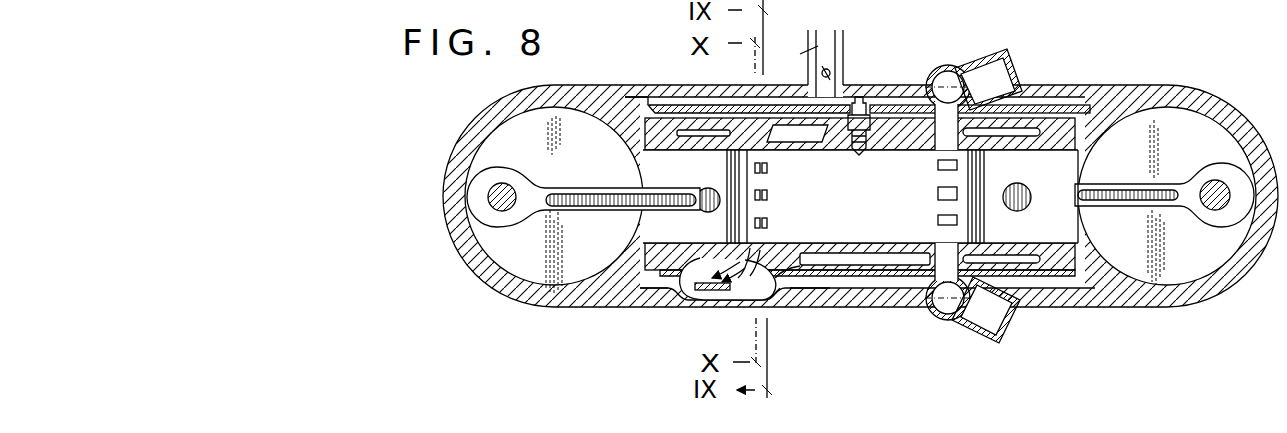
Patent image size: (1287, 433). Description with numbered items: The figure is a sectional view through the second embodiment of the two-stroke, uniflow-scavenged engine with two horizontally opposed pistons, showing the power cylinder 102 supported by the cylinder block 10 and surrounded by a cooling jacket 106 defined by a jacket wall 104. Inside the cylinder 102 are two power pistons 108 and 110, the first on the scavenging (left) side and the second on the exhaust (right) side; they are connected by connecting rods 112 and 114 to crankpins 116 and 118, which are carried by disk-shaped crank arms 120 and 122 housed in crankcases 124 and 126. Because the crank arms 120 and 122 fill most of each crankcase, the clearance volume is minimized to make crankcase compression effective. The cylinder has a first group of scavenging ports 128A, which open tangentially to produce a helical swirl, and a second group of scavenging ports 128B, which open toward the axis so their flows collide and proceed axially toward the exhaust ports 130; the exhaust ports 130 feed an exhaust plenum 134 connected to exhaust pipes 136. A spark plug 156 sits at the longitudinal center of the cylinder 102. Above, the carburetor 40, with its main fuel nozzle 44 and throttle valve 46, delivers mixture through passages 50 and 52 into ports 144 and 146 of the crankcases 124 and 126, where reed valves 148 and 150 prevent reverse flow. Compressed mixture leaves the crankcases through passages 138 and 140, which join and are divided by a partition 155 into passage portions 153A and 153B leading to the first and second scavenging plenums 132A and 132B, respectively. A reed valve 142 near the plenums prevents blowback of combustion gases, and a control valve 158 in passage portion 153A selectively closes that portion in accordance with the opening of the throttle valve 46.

The cylinder block 10 is at (1140, 86).
The carburetor 40 is at (843, 46).
The main fuel nozzle 44 is at (806, 50).
The throttle valve 46 is at (833, 74).
The passage 50 is at (722, 105).
The passage 52 is at (1042, 84).
The power cylinder 102 is at (821, 251).
The jacket wall 104 is at (872, 277).
The cooling jacket 106 is at (905, 264).
The power piston 108 is at (748, 178).
The power piston 110 is at (966, 176).
The connecting rod 112 is at (563, 188).
The connecting rod 114 is at (1120, 206).
The crankpin 116 is at (505, 184).
The crankpin 118 is at (1205, 185).
The crank arm 120 is at (551, 280).
The crank arm 122 is at (1187, 270).
The crankcase 124 is at (640, 231).
The crankcase 126 is at (988, 228).
The first group of scavenging ports 128A is at (769, 198).
The second group of scavenging ports 128B is at (752, 192).
The exhaust ports 130 is at (938, 218).
The first scavenging plenum 132A is at (800, 290).
The second scavenging plenum 132B is at (683, 203).
The exhaust plenum 134 is at (943, 76).
The exhaust pipes 136 is at (995, 66).
The passage 138 is at (652, 282).
The passage 140 is at (833, 266).
The reed valve 142 is at (680, 285).
The port 144 is at (614, 136).
The port 146 is at (1113, 128).
The reed valve 148 is at (640, 97).
The reed valve 150 is at (1105, 189).
The passage portion 153A is at (720, 290).
The passage portion 153B is at (700, 284).
The partition 155 is at (753, 262).
The spark plug 156 is at (855, 150).
The control valve 158 is at (770, 284).